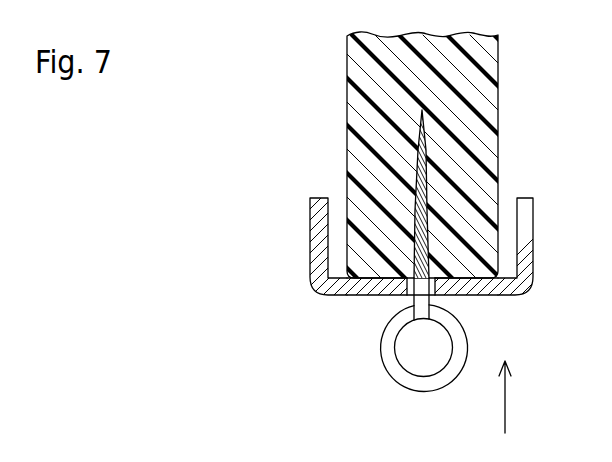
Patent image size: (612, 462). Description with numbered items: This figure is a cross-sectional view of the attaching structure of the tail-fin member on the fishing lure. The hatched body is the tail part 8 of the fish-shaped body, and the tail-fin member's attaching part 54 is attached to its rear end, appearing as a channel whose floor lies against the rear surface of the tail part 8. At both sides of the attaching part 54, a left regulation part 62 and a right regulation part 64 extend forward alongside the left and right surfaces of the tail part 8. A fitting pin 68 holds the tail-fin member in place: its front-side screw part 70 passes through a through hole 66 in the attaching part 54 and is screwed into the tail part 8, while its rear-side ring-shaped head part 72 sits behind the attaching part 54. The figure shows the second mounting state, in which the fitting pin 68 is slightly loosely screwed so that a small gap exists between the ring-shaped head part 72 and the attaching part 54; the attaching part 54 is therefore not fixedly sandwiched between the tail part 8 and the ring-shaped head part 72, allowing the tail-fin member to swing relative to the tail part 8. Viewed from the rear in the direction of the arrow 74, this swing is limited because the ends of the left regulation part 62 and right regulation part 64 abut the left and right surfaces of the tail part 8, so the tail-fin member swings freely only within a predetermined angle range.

The tail part 8 is at (473, 83).
The attaching part 54 is at (350, 296).
The left regulation part 62 is at (309, 205).
The right regulation part 64 is at (534, 222).
The through hole 66 is at (408, 277).
The fitting pin 68 is at (484, 342).
The screw part 70 is at (421, 196).
The ring-shaped head part 72 is at (426, 392).
The arrow 74 is at (505, 405).